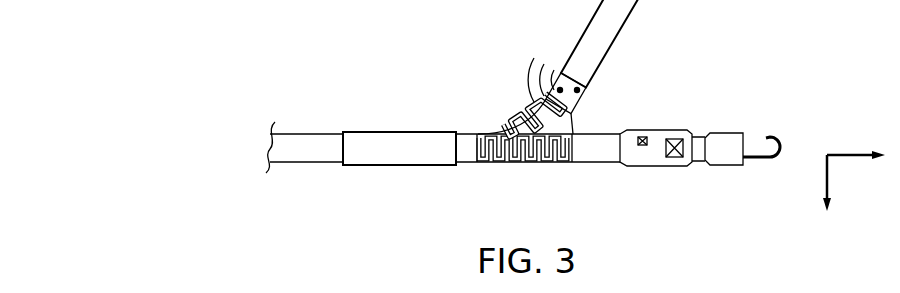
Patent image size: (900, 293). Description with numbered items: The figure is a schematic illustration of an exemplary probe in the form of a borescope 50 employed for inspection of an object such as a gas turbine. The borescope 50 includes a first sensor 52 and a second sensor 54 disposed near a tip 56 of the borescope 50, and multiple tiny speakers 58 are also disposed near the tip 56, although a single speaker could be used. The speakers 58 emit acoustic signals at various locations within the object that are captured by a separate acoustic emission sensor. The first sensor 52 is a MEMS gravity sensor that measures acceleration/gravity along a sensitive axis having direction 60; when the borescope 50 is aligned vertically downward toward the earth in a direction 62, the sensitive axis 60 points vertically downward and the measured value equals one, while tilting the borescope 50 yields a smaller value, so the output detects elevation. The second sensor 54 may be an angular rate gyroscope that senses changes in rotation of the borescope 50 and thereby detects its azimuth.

The borescope 50 is at (141, 46).
The first sensor 52 is at (643, 146).
The second sensor 54 is at (675, 158).
The tip 56 is at (770, 166).
The speakers 58 is at (583, 92).
The direction of sensitive axis 60 is at (872, 150).
The direction 62 is at (832, 203).